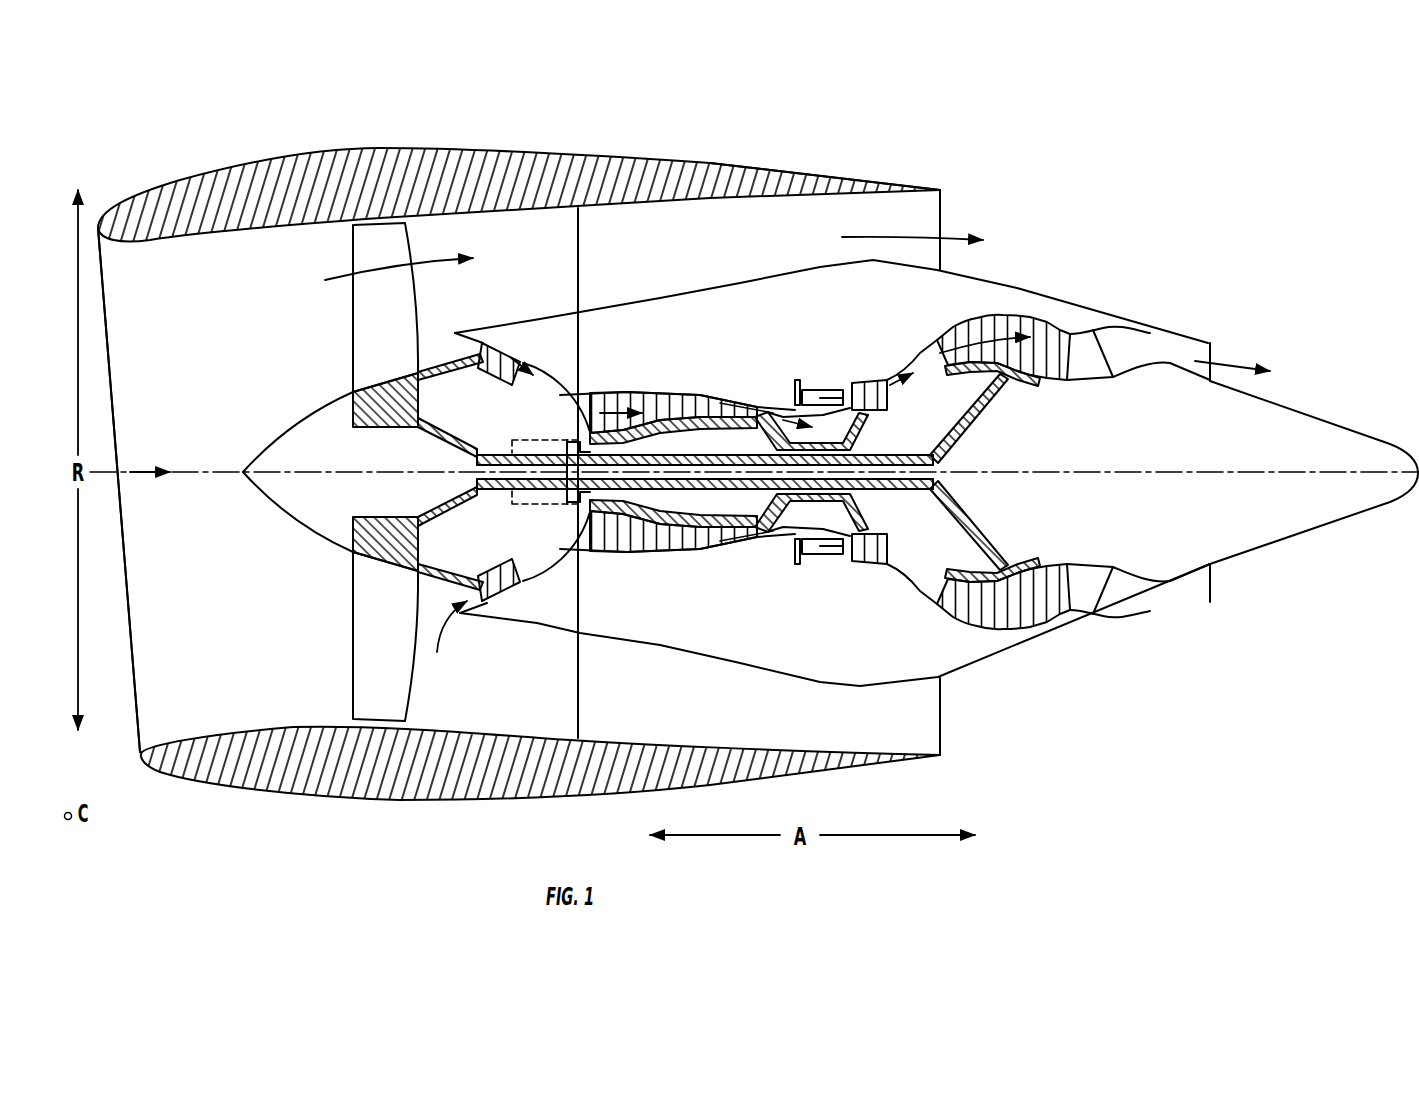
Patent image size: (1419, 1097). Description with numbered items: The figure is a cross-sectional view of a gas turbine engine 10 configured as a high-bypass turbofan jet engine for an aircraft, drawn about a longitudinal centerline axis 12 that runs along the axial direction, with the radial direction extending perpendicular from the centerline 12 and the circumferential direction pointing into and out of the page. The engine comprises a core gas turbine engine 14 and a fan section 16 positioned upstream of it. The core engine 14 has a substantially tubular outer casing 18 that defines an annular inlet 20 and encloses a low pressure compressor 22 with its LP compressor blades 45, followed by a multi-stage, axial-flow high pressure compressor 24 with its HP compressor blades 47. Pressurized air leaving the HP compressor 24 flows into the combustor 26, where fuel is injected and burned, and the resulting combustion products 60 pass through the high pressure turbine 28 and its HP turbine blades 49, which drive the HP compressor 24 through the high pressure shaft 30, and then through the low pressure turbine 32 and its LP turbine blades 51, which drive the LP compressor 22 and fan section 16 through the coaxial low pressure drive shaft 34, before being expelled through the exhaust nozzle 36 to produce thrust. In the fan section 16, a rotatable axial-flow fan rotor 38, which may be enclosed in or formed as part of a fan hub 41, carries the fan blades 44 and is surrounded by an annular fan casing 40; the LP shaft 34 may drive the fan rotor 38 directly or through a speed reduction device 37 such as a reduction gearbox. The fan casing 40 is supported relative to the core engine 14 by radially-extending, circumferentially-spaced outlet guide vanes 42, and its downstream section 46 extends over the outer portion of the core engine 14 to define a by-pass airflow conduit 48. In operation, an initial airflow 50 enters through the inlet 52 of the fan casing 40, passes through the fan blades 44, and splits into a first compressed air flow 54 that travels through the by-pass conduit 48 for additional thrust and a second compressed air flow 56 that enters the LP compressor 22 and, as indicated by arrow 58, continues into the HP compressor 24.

The gas turbine engine 10 is at (1120, 172).
The centerline axis 12 is at (1143, 470).
The core gas turbine engine 14 is at (757, 346).
The fan section 16 is at (397, 133).
The outer casing 18 is at (760, 668).
The annular inlet 20 is at (445, 641).
The low pressure compressor 22 is at (537, 557).
The high pressure compressor 24 is at (616, 549).
The combustor 26 is at (822, 556).
The high pressure turbine 28 is at (862, 562).
The high pressure shaft 30 is at (817, 440).
The low pressure turbine 32 is at (1030, 632).
The low pressure drive shaft 34 is at (528, 445).
The exhaust nozzle 36 is at (1212, 350).
The speed reduction device 37 is at (547, 440).
The fan rotor 38 is at (417, 432).
The fan casing 40 is at (445, 806).
The fan hub 41 is at (300, 530).
The outlet guide vanes 42 is at (578, 238).
The fan blades 44 is at (353, 662).
The LP compressor blades 45 is at (478, 574).
The downstream section 46 is at (787, 162).
The HP compressor blades 47 is at (688, 402).
The by-pass airflow conduit 48 is at (831, 278).
The HP turbine blades 49 is at (887, 562).
The initial airflow 50 is at (120, 466).
The LP turbine blades 51 is at (975, 622).
The inlet 52 is at (133, 708).
The first compressed air flow 54 is at (372, 262).
The second compressed air flow 56 is at (447, 343).
The airflow entering HP compressor 58 is at (599, 410).
The combustion products 60 is at (875, 387).